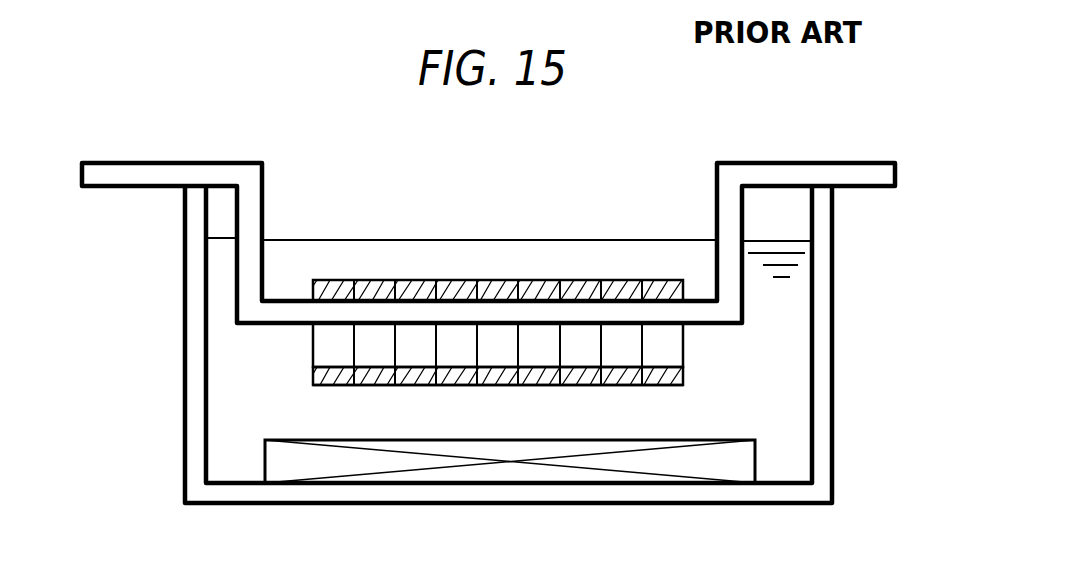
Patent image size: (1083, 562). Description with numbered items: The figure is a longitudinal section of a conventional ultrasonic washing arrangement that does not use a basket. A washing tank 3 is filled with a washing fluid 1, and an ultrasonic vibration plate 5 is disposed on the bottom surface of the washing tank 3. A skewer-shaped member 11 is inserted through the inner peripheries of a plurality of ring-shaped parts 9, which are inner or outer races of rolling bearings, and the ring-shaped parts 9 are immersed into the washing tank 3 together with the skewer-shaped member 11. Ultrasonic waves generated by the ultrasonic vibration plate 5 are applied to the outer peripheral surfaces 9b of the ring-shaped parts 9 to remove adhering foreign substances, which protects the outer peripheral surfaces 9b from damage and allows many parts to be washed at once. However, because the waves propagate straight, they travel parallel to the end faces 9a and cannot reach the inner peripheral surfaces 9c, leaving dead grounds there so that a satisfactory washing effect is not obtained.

The washing fluid 1 is at (782, 241).
The washing tank 3 is at (834, 330).
The ultrasonic vibration plate 5 is at (757, 461).
The ring-shaped part 9 is at (470, 281).
The end face 9a is at (685, 378).
The outer peripheral surface 9b is at (533, 386).
The inner peripheral surface 9c is at (685, 352).
The skewer-shaped member 11 is at (291, 298).